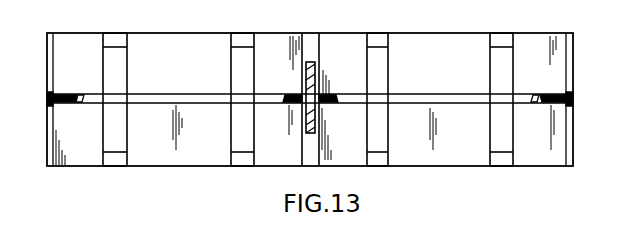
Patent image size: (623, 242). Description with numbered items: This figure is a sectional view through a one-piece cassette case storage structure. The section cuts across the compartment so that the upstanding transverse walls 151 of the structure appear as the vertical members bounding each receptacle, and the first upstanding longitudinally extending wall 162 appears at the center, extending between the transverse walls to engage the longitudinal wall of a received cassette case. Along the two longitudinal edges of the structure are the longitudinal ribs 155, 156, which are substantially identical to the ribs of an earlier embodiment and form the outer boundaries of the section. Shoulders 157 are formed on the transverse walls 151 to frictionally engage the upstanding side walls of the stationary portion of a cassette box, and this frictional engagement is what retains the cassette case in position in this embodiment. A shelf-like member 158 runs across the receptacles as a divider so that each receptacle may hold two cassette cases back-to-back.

The transverse wall 151 is at (157, 33).
The longitudinal rib 155 is at (570, 98).
The longitudinal rib 156 is at (50, 98).
The shoulder 157 is at (237, 121).
The shelf-like member 158 is at (70, 95).
The upstanding longitudinally extending wall 162 is at (308, 62).